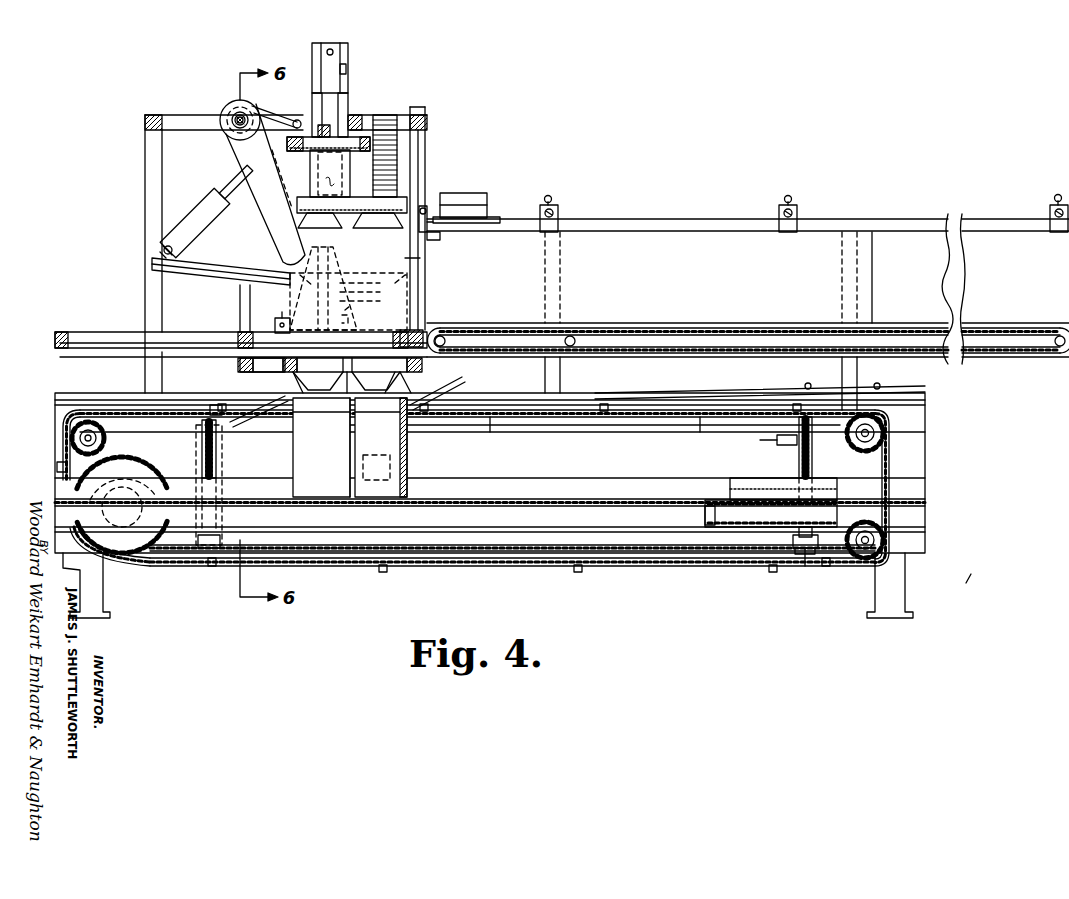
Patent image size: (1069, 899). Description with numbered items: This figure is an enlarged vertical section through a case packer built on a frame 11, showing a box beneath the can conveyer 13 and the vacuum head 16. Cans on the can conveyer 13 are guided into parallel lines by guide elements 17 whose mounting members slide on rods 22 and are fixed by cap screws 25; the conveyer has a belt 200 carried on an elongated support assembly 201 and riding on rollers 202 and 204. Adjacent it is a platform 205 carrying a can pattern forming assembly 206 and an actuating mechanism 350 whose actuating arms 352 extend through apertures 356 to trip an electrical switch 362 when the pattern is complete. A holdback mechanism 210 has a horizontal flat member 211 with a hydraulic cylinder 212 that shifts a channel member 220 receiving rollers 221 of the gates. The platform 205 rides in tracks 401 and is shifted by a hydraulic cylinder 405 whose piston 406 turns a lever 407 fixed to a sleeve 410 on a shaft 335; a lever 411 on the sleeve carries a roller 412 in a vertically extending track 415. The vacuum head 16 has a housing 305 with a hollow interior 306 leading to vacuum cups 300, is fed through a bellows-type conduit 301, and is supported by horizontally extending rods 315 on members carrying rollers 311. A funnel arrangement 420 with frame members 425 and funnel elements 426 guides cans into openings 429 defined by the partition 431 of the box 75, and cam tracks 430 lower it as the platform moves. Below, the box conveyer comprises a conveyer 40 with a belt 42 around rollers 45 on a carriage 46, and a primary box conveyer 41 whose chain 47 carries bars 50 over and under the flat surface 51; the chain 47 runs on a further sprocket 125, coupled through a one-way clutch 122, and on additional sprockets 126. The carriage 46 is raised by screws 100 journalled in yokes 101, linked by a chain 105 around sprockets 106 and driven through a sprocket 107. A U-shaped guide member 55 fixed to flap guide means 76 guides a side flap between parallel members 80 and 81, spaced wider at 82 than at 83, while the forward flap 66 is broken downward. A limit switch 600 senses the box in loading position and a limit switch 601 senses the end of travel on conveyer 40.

The frame 11 is at (918, 505).
The can conveyer 13 is at (668, 285).
The vacuum head 16 is at (402, 165).
The guide elements 17 is at (625, 240).
The rods 22 is at (552, 214).
The cap screws 25 is at (549, 195).
The conveyer 40 is at (710, 490).
The primary box conveyer 41 is at (583, 425).
The belt 42 is at (745, 527).
The rollers 45 is at (727, 527).
The carriage 46 is at (550, 545).
The chain 47 is at (490, 420).
The bars 50 is at (426, 420).
The flat surface 51 is at (505, 503).
The U-shaped guide member 55 is at (880, 380).
The forward flap 66 is at (237, 420).
The box 75 is at (408, 467).
The flap guide means 76 is at (614, 382).
The parallel member 80 is at (738, 388).
The parallel member 81 is at (730, 428).
The wider spacing location 82 is at (752, 403).
The narrower spacing location 83 is at (483, 398).
The screws 100 is at (214, 465).
The yokes 101 is at (222, 536).
The chain 105 is at (423, 550).
The sprockets 106 is at (215, 567).
The sprocket 107 is at (798, 560).
The one-way clutch 122 is at (168, 478).
The further sprocket 125 is at (128, 548).
The additional sprockets 126 is at (68, 425).
The belt 200 is at (668, 328).
The elongated support assembly 201 is at (575, 337).
The roller 202 is at (445, 330).
The roller 204 is at (1060, 327).
The platform 205 is at (394, 320).
The can pattern forming assembly 206 is at (404, 258).
The holdback mechanism 210 is at (477, 172).
The horizontal flat member 211 is at (478, 219).
The hydraulic cylinder 212 is at (466, 202).
The channel member 220 is at (426, 208).
The rollers 221 is at (440, 236).
The vacuum cups 300 is at (318, 250).
The bellows-type conduit 301 is at (414, 108).
The housing 305 is at (416, 200).
The hollow interior 306 is at (306, 213).
The rollers 311 is at (348, 50).
The horizontally extending rods 315 is at (335, 125).
The shaft 335 is at (232, 122).
The actuating mechanism 350 is at (280, 314).
The actuating arms 352 is at (238, 345).
The apertures 356 is at (352, 308).
The electrical switch 362 is at (412, 275).
The tracks 401 is at (108, 330).
The hydraulic cylinder 405 is at (200, 235).
The piston 406 is at (232, 182).
The lever 407 is at (274, 120).
The sleeve 410 is at (240, 110).
The lever 411 is at (272, 180).
The roller 412 is at (302, 272).
The vertically extending track 415 is at (370, 274).
The funnel arrangement 420 is at (285, 384).
The frame members 425 is at (232, 372).
The funnel elements 426 is at (388, 378).
The openings 429 is at (303, 433).
The cam tracks 430 is at (182, 285).
The partition 431 is at (348, 455).
The limit switch 600 is at (408, 491).
The limit switch 601 is at (772, 445).